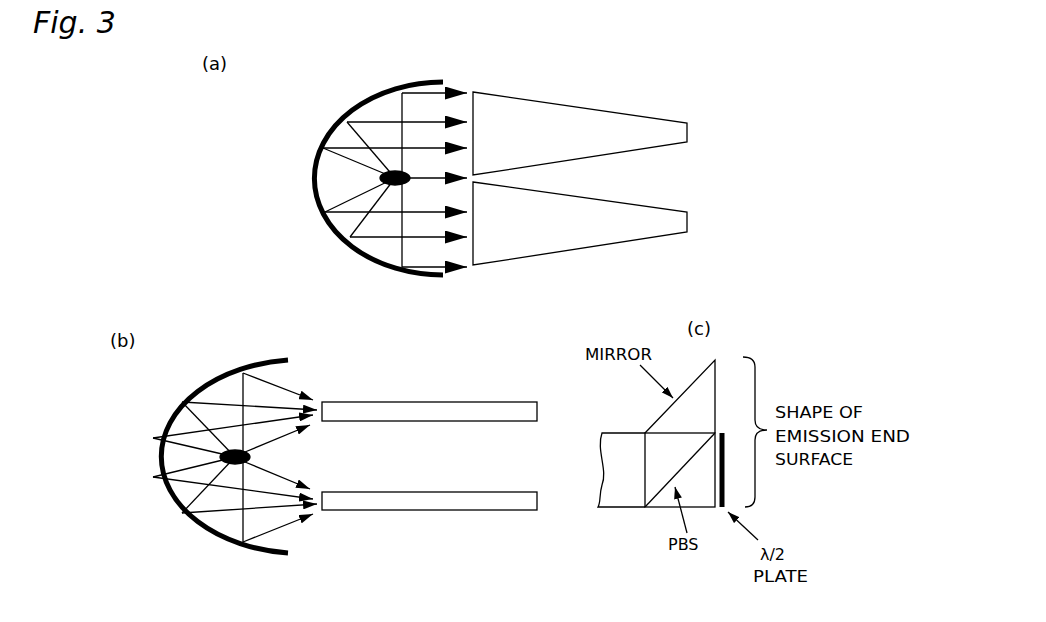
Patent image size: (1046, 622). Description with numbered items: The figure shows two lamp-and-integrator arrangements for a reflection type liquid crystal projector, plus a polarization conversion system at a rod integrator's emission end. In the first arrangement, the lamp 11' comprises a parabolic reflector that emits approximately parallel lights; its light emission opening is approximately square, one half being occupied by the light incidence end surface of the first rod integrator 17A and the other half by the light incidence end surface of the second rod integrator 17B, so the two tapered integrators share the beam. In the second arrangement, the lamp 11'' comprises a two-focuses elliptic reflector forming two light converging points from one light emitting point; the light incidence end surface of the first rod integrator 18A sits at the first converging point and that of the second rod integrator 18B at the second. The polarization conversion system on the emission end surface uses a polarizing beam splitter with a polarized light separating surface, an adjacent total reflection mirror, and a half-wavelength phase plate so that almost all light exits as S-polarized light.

The lamp 11' is at (390, 170).
The first rod integrator 17A is at (573, 112).
The second rod integrator 17B is at (585, 248).
The lamp 11'' is at (235, 445).
The first rod integrator 18A is at (423, 407).
The second rod integrator 18B is at (433, 508).